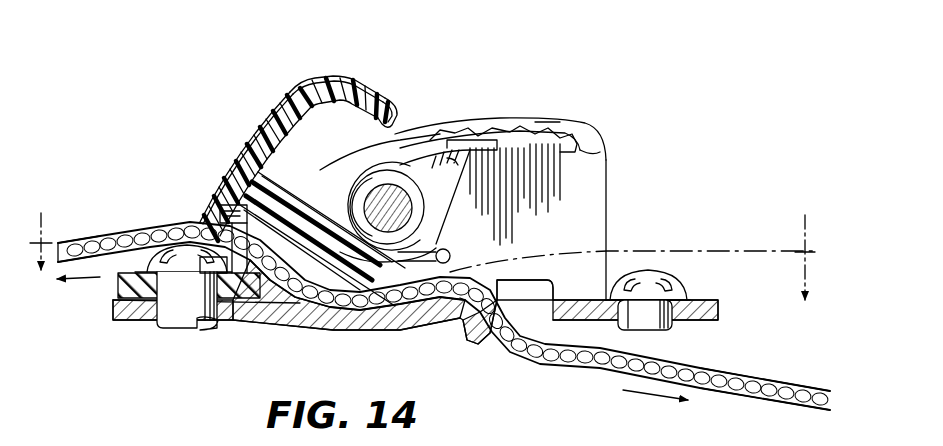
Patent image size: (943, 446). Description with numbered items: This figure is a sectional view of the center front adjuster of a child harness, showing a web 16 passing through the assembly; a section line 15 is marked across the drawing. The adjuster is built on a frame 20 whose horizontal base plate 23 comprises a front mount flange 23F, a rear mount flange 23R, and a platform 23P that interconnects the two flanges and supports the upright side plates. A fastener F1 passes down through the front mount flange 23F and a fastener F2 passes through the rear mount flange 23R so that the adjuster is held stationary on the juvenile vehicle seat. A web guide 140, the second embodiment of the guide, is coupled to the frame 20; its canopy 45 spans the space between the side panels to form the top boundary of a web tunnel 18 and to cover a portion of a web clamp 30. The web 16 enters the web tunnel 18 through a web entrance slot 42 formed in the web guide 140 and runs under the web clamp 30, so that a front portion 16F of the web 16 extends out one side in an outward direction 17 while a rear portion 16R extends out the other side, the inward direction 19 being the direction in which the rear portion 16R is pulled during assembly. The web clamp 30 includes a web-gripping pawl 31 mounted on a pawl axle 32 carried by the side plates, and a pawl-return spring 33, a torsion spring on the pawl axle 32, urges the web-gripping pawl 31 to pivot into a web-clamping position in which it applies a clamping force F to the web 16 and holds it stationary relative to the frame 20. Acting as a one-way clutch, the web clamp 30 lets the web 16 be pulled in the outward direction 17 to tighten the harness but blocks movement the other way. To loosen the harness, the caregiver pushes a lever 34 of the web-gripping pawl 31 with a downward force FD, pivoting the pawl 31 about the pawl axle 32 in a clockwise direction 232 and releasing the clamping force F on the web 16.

The section line 15- 15 is at (422, 241).
The web 16 is at (108, 238).
The front portion of web 16F is at (72, 243).
The rear portion of web 16R is at (780, 373).
The outward direction 17 is at (82, 282).
The web tunnel 18 is at (213, 207).
The inward direction 19 is at (648, 395).
The frame 20 is at (622, 213).
The horizontal base plate 23 is at (727, 310).
The front mount flange 23F is at (135, 323).
The platform 23P is at (380, 322).
The rear mount flange 23R is at (693, 300).
The web clamp 30 is at (538, 121).
The web-gripping pawl 31 is at (263, 200).
The pawl axle 32 is at (406, 185).
The pawl-return spring 33 is at (473, 147).
The lever 34 is at (600, 150).
The web entrance slot 42 is at (205, 216).
The canopy 45 is at (304, 84).
The web guide 140 is at (337, 74).
The clockwise direction 232 is at (460, 232).
The clamping force F is at (318, 256).
The fastener F1 is at (182, 315).
The fastener F2 is at (647, 282).
The downward force FD is at (557, 126).